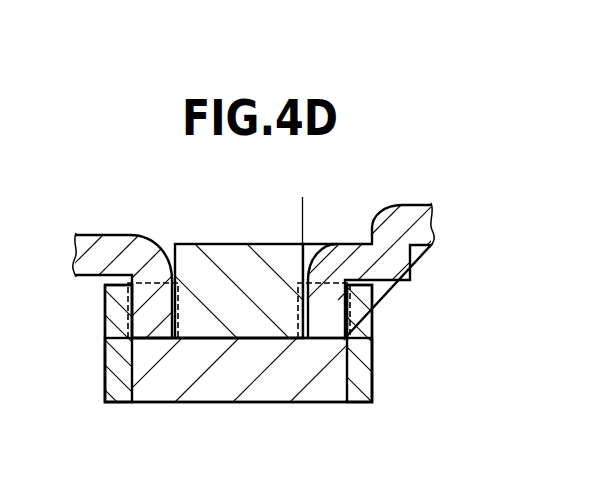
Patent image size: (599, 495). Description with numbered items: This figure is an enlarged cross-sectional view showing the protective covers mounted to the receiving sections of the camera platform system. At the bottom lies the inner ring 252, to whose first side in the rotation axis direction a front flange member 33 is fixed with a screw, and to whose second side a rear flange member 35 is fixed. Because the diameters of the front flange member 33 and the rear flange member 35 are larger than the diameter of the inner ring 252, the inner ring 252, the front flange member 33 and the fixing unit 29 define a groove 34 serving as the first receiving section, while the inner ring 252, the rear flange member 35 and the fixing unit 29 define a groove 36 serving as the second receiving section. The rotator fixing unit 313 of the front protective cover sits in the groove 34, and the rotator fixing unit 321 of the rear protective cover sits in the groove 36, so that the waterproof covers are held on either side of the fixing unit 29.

The rotator fixing unit 313 is at (151, 266).
The fixing unit 29 is at (231, 259).
The rotator fixing unit 321 is at (331, 259).
The front flange member 33 is at (117, 358).
The rear flange member 35 is at (363, 337).
The groove 34 is at (160, 340).
The groove 36 is at (320, 340).
The inner ring 252 is at (254, 393).